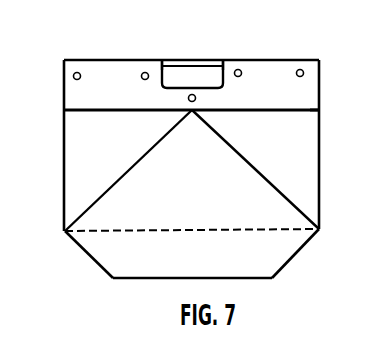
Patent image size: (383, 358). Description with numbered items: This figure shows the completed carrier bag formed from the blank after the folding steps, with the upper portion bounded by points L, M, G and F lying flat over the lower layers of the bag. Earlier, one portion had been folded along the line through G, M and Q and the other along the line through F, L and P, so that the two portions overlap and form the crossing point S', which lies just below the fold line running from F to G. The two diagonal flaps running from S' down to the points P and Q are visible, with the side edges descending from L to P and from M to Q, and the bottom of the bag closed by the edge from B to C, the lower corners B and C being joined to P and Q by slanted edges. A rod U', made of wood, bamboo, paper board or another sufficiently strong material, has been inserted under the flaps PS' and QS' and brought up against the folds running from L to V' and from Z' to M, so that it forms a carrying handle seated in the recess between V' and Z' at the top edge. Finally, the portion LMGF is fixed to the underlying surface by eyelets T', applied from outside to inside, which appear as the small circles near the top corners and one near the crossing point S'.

The point L of the blank L is at (104, 138).
The point M of the blank M is at (280, 136).
The point F of the blank F is at (184, 109).
The point G of the blank G is at (323, 109).
The point P of the blank P is at (184, 233).
The point Q of the blank Q is at (305, 249).
The point B of the blank B is at (92, 266).
The point C of the blank C is at (198, 289).
The crossing point S' is at (192, 170).
The fold V' is at (166, 53).
The rod U' is at (192, 55).
The fold Z' is at (227, 52).
The eyelets T' is at (189, 57).